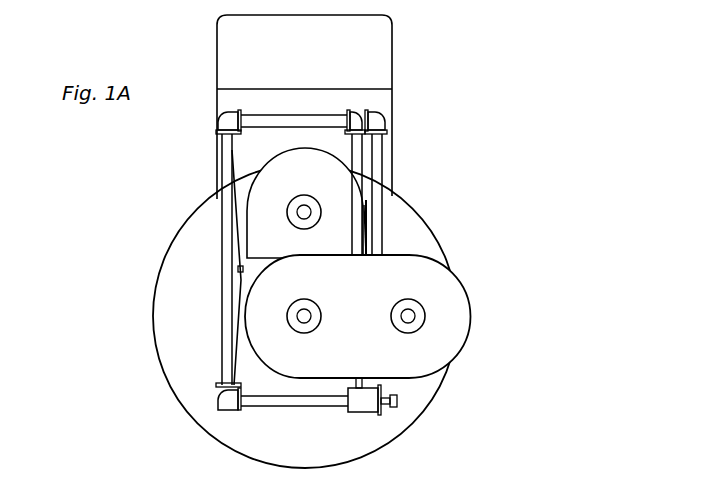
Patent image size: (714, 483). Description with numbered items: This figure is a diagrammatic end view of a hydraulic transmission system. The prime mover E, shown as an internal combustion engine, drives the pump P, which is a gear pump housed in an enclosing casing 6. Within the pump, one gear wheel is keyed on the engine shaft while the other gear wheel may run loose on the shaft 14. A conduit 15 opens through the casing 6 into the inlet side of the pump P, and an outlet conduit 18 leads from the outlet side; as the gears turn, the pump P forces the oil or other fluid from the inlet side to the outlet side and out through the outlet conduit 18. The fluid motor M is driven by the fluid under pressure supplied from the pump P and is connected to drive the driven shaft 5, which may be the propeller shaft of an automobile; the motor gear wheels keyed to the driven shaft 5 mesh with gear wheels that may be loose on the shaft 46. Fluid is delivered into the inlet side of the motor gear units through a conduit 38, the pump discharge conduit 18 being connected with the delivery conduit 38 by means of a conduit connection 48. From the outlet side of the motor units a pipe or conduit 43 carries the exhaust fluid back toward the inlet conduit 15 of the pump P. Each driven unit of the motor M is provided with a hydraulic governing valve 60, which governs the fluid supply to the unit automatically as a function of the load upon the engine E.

The prime mover E is at (390, 56).
The pump P is at (332, 162).
The fluid motor M is at (452, 277).
The enclosing casing 6 is at (257, 200).
The shaft 14 is at (304, 211).
The driven shaft 5 is at (304, 315).
The shaft 46 is at (413, 314).
The conduit 15 is at (376, 202).
The pipe or conduit 43 is at (358, 237).
The outlet conduit 18 is at (240, 266).
The conduit connection 48 is at (298, 405).
The hydraulic governing valve 60 is at (368, 406).
The conduit 38 is at (360, 380).